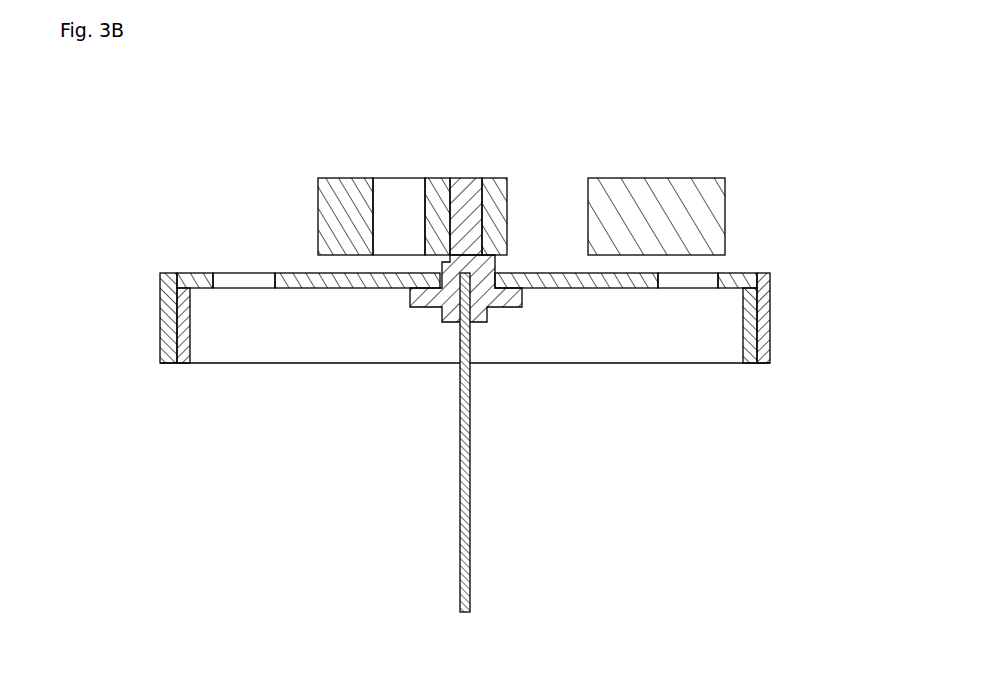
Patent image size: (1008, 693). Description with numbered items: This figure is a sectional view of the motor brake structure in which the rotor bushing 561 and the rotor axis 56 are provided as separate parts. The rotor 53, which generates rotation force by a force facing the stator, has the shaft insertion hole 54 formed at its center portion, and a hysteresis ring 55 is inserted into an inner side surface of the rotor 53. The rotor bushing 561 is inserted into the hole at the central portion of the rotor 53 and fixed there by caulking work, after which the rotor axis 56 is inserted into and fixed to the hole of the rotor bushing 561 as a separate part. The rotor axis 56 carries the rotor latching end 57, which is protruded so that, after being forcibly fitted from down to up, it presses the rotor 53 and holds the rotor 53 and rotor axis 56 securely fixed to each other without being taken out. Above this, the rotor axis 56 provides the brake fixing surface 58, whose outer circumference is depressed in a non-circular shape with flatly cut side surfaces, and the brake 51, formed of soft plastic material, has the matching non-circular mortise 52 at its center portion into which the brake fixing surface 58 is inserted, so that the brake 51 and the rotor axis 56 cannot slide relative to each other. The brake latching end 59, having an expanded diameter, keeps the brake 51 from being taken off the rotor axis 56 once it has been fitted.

The brake 51 is at (668, 195).
The mortise 52 is at (495, 213).
The rotor 53 is at (770, 290).
The shaft insertion hole 54 is at (440, 302).
The hysteresis ring 55 is at (190, 348).
The rotor axis 56 is at (468, 440).
The rotor latching end 57 is at (498, 272).
The brake fixing surface 58 is at (455, 213).
The brake latching end 59 is at (442, 178).
The rotor bushing 561 is at (467, 197).